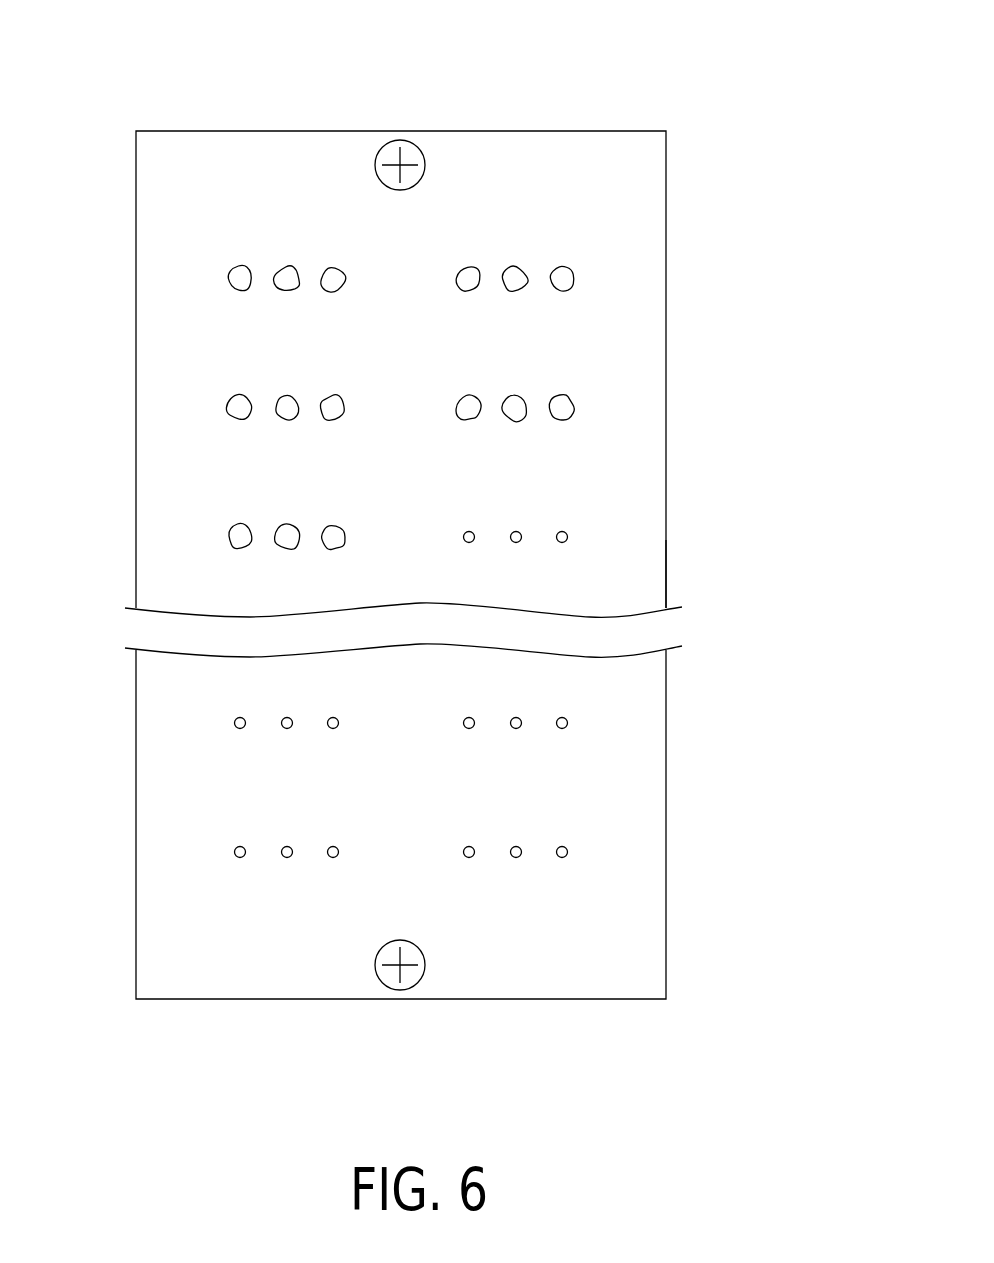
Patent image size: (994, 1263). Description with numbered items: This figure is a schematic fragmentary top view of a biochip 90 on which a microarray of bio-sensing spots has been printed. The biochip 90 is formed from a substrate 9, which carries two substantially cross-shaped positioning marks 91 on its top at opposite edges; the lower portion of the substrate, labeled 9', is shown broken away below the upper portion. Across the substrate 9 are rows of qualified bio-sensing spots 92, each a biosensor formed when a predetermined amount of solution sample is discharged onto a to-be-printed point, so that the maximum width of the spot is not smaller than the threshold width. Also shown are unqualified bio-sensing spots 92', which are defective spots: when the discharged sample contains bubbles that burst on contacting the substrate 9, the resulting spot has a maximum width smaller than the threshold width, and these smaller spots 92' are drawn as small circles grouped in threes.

The biochip 90 is at (732, 134).
The substrate 9 is at (403, 502).
The substrate lower portion 9' is at (707, 543).
The positioning mark 91 is at (422, 152).
The bio-sensing spot 92 is at (400, 387).
The unqualified bio-sensing spot 92' is at (399, 641).